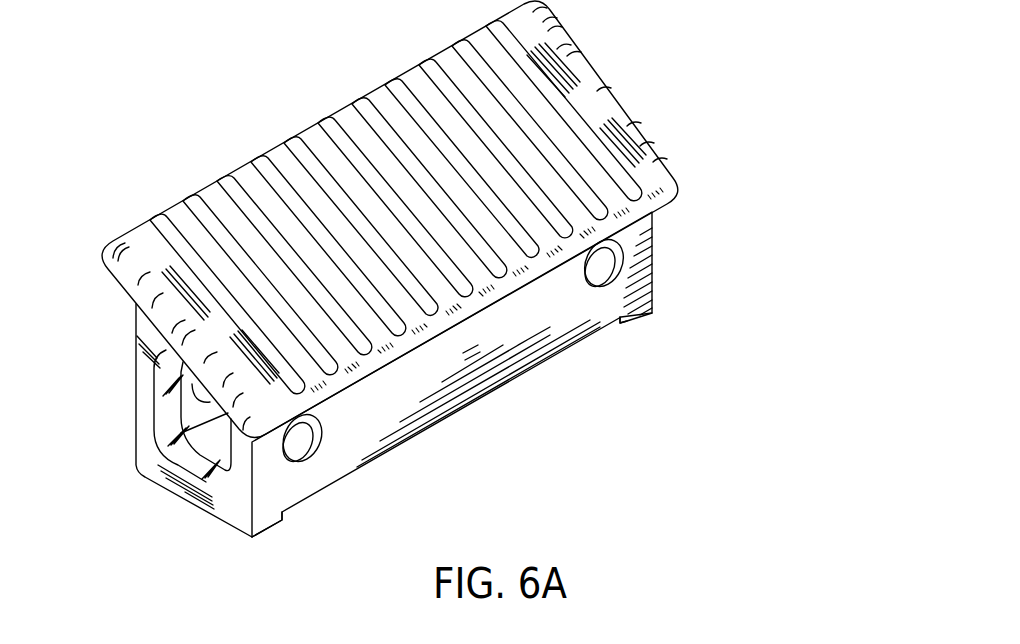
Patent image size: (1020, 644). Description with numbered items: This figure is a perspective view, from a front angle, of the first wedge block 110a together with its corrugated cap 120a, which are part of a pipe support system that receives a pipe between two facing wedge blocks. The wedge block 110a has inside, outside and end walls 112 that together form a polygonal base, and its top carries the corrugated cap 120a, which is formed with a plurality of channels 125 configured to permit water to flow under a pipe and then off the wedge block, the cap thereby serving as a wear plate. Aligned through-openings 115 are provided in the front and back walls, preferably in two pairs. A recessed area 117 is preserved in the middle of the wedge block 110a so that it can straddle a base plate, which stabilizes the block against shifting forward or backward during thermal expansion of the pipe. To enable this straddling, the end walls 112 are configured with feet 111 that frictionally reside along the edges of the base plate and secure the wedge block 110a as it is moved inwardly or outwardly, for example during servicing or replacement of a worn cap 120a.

The first wedge block 110a is at (137, 467).
The feet 111 is at (265, 533).
The end walls 112 is at (208, 500).
The through-openings 115 is at (303, 438).
The recessed area 117 is at (453, 413).
The corrugated cap 120a is at (563, 43).
The channels 125 is at (397, 87).